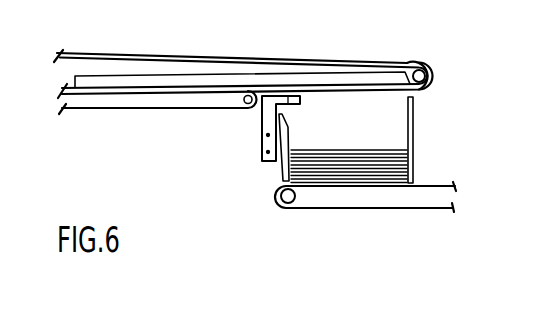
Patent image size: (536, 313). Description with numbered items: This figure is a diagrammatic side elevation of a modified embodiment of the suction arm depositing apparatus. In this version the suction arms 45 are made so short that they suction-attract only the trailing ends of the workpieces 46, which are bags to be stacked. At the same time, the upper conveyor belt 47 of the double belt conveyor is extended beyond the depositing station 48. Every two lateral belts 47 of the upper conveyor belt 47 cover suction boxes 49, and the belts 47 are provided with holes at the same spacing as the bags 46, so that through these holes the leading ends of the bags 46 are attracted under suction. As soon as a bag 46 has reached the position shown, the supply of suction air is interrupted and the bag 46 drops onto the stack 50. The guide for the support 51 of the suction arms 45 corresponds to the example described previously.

The suction arm 45 is at (291, 104).
The workpiece 46 is at (364, 91).
The upper conveyor belt 47 is at (401, 63).
The depositing station 48 is at (398, 141).
The suction box 49 is at (149, 78).
The stack 50 is at (347, 177).
The support 51 is at (263, 113).